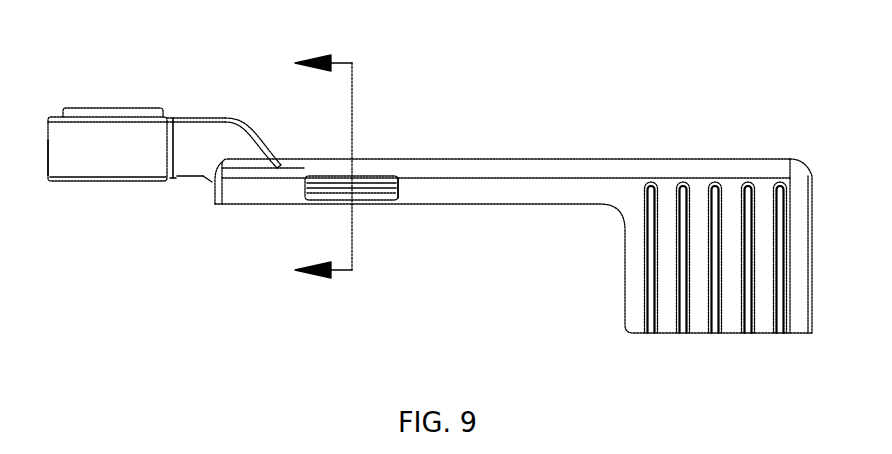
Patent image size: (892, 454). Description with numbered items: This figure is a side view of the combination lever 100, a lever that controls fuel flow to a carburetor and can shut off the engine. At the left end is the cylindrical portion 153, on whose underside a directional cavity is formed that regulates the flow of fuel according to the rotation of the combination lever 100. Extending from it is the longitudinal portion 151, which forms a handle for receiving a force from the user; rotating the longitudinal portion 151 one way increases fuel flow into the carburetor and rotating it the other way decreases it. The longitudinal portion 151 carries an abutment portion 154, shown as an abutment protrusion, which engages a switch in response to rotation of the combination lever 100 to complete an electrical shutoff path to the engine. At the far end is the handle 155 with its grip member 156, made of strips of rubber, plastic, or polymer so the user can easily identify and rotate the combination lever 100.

The combination lever 100 is at (128, 26).
The longitudinal portion 151 is at (448, 160).
The cylindrical portion 153 is at (95, 172).
The abutment portion 154 is at (370, 204).
The handle 155 is at (702, 167).
The grip member 156 is at (678, 320).